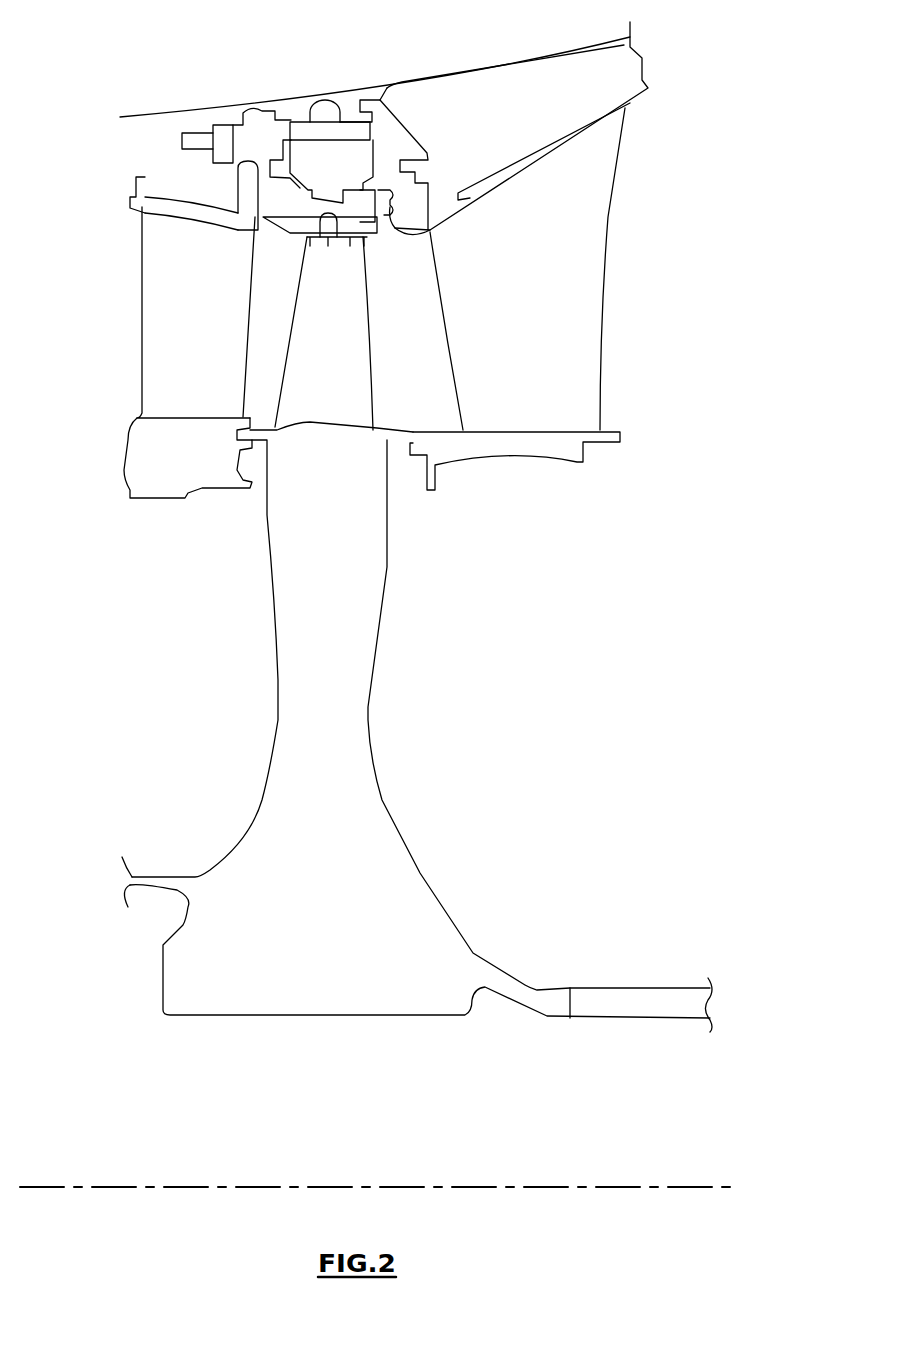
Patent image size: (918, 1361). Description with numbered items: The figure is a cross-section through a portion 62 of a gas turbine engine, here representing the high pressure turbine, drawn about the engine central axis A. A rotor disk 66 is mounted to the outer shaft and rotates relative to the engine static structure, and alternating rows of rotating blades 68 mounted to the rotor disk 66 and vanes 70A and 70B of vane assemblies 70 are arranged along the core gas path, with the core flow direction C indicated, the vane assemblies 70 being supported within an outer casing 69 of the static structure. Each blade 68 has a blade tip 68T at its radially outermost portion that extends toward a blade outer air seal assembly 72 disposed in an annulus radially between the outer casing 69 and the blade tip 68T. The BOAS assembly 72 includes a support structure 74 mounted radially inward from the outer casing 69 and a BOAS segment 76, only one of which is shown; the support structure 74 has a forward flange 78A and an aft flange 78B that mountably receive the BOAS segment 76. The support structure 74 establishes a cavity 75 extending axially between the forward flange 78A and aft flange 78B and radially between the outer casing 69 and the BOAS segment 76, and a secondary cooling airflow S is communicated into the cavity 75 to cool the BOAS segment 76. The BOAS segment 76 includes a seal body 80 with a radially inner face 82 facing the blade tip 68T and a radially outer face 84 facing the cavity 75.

The portion of gas turbine engine 62 is at (675, 175).
The rotor disk 66 is at (405, 848).
The blade 68 is at (340, 369).
The blade tip 68T is at (349, 240).
The outer casing 69 is at (365, 92).
The vane assembly 70 is at (112, 471).
The vane 70A is at (198, 309).
The vane 70B is at (550, 309).
The blade outer air seal assembly 72 is at (289, 243).
The support structure 74 is at (332, 167).
The cavity 75 is at (327, 112).
The BOAS segment 76 is at (270, 188).
The forward flange 78A is at (280, 180).
The aft flange 78B is at (390, 170).
The seal body 80 is at (402, 214).
The radially inner face 82 is at (352, 235).
The radially outer face 84 is at (325, 217).
The secondary cooling airflow S is at (327, 179).
The core flow direction C is at (272, 356).
The engine central axis A is at (620, 1188).